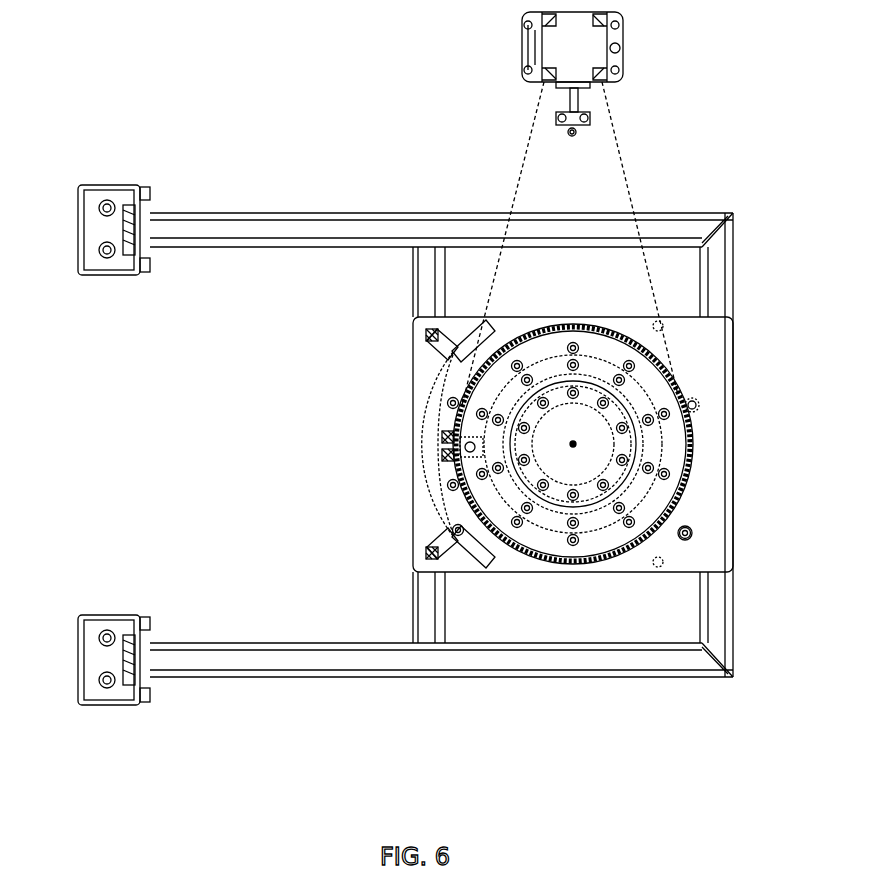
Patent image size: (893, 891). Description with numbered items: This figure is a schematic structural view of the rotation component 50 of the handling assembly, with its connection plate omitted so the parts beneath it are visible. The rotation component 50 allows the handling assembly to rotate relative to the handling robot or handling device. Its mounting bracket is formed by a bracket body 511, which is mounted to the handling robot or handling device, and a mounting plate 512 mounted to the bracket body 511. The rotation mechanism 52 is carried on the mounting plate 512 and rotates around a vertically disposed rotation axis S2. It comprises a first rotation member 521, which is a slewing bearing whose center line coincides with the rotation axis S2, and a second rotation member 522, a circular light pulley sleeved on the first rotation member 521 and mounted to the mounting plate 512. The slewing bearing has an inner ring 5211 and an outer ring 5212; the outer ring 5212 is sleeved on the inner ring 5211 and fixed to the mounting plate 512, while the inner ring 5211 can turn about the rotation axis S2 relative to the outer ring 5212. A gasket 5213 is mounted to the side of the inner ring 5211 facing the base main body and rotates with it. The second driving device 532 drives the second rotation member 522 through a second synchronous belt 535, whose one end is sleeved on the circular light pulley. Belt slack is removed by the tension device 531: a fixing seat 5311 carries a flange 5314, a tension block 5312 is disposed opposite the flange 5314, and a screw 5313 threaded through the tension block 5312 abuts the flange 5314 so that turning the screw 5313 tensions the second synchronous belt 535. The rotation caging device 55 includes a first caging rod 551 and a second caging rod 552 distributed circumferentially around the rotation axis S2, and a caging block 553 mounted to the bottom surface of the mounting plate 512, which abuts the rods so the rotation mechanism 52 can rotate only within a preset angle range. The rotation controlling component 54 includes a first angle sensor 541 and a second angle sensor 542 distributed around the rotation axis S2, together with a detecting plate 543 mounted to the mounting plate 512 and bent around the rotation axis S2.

The rotation component 50 is at (200, 105).
The bracket body 511 is at (415, 232).
The mounting plate 512 is at (460, 331).
The rotation mechanism 52 is at (205, 385).
The first rotation member 521 is at (266, 355).
The inner ring 5211 is at (547, 378).
The outer ring 5212 is at (498, 401).
The gasket 5213 is at (525, 471).
The second rotation member 522 is at (482, 488).
The rotation axis S2 is at (573, 447).
The tension device 531 is at (734, 85).
The fixing seat 5311 is at (618, 56).
The tension block 5312 is at (585, 123).
The screw 5313 is at (572, 138).
The flange 5314 is at (588, 87).
The second driving device 532 is at (585, 45).
The second synchronous belt 535 is at (516, 184).
The rotation controlling component 54 is at (593, 710).
The first angle sensor 541 is at (458, 535).
The second angle sensor 542 is at (683, 540).
The detecting plate 543 is at (432, 560).
The rotation caging device 55 is at (810, 372).
The first caging rod 551 is at (560, 400).
The second caging rod 552 is at (700, 405).
The caging block 553 is at (580, 444).